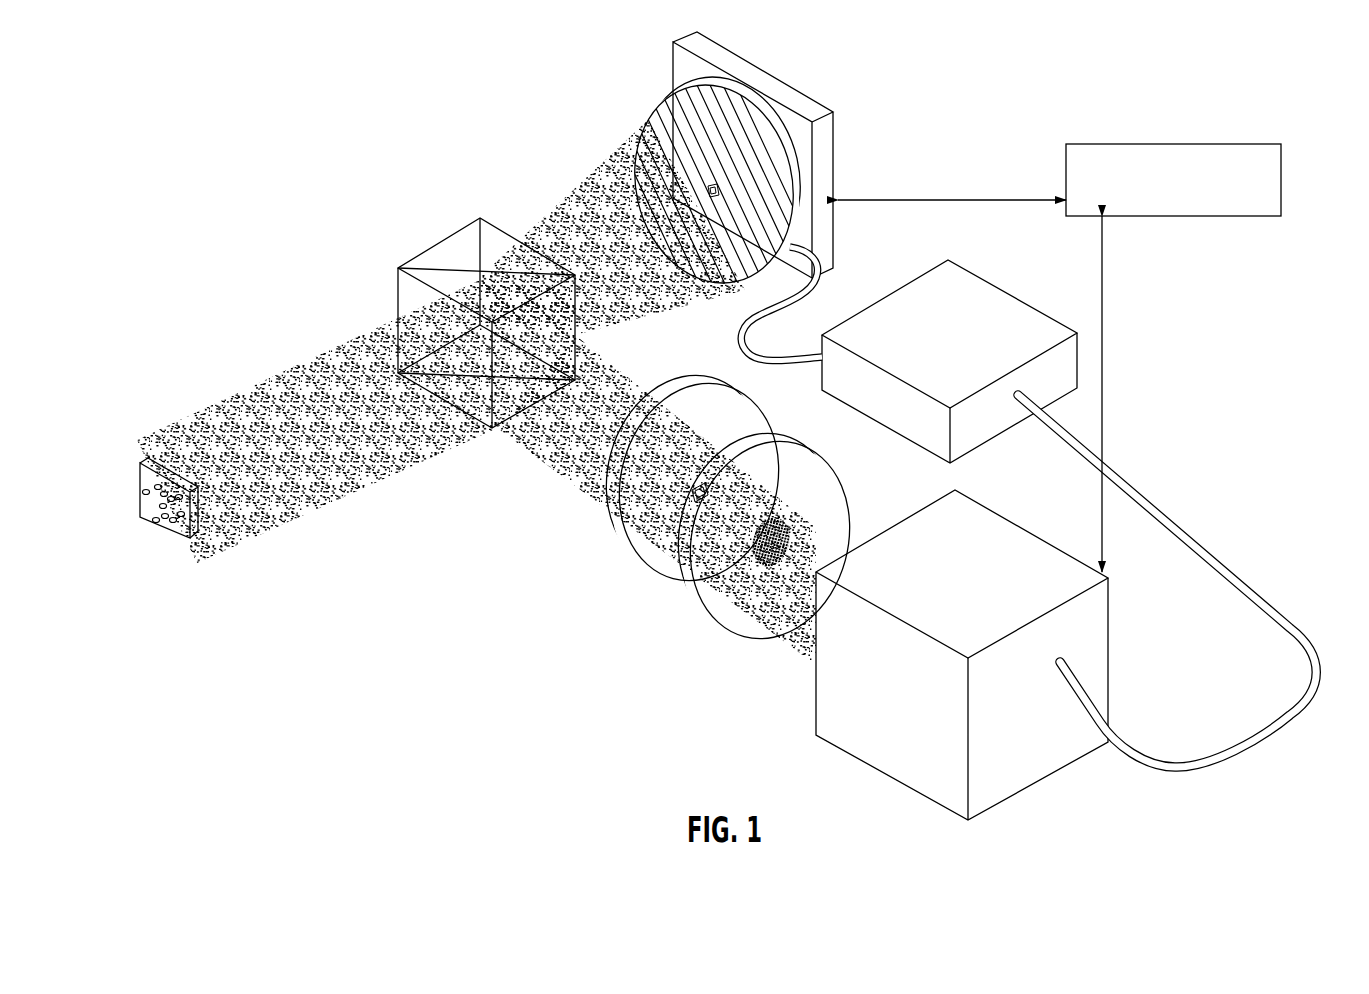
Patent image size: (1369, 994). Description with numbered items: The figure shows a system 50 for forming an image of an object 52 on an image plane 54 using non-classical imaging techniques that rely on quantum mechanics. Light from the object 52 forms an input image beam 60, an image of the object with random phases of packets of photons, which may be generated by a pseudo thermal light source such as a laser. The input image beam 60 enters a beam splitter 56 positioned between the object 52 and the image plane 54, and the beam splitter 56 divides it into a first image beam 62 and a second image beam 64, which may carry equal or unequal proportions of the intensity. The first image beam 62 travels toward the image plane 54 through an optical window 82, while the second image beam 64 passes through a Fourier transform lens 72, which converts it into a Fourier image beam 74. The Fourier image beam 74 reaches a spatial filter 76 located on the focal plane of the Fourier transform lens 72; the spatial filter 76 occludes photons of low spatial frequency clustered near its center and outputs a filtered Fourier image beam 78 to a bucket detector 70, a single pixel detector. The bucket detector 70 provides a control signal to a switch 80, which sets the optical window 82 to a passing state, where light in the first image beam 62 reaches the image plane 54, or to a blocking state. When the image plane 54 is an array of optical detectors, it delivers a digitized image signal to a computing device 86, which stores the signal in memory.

The system 50 is at (404, 82).
The object 52 is at (158, 527).
The image plane 54 is at (828, 164).
The beam splitter 56 is at (432, 259).
The input image beam 60 is at (315, 364).
The first image beam 62 is at (590, 185).
The second image beam 64 is at (607, 462).
The bucket detector 70 is at (852, 731).
The Fourier transform lens 72 is at (635, 542).
The Fourier image beam 74 is at (793, 504).
The spatial filter 76 is at (695, 607).
The filtered Fourier image beam 78 is at (803, 637).
The switch 80 is at (1003, 312).
The optical window 82 is at (672, 102).
The computing device 86 is at (1246, 206).